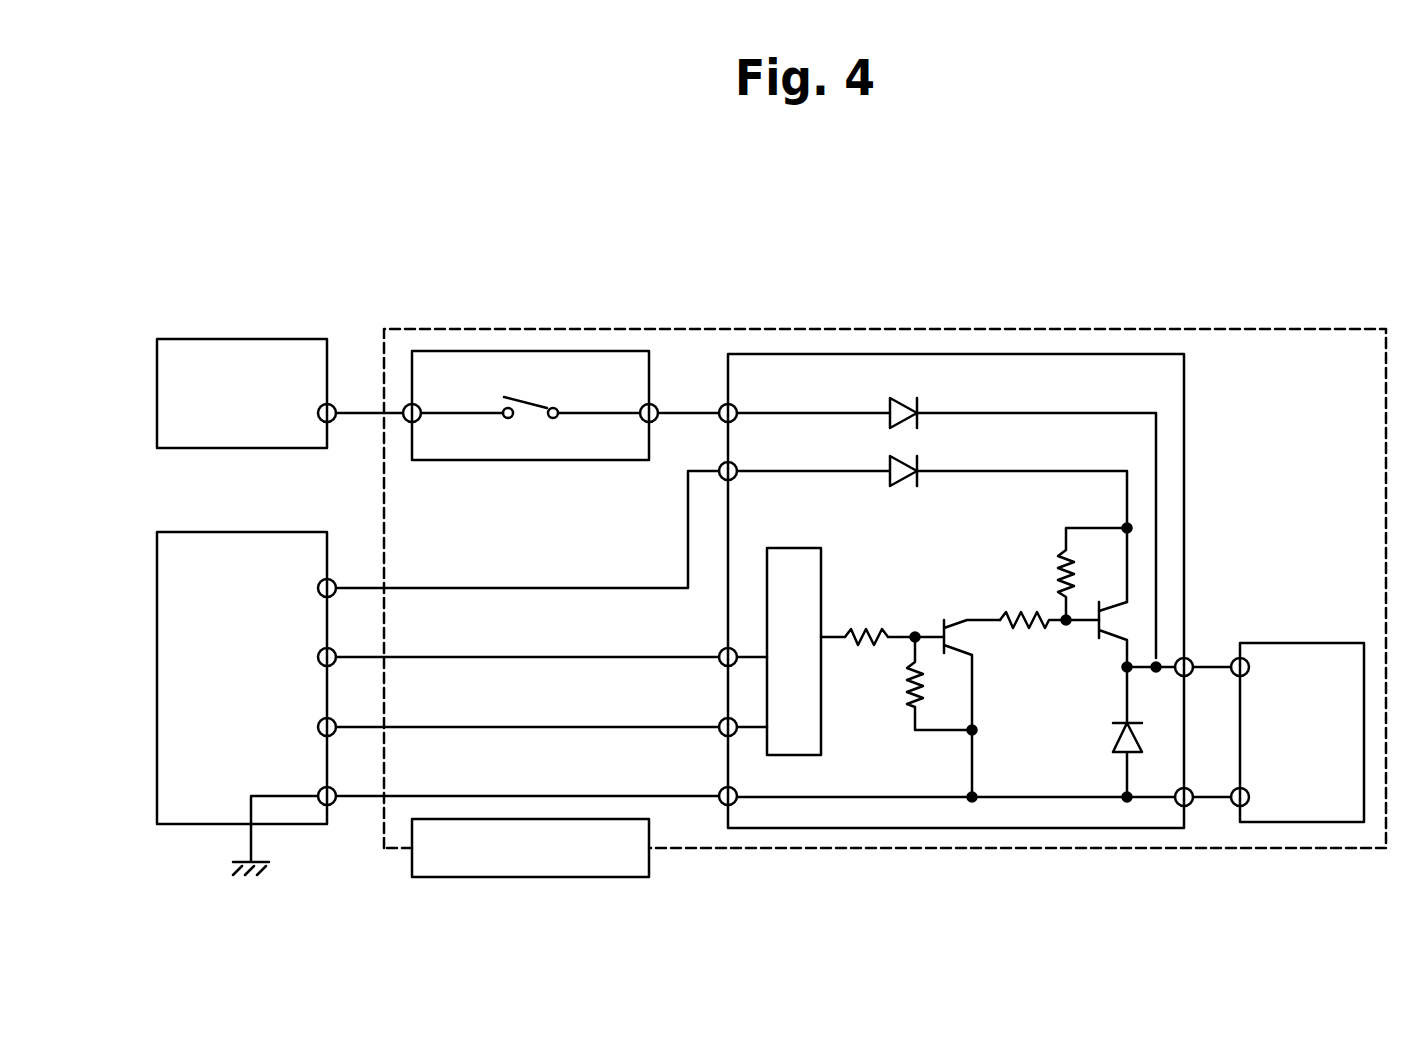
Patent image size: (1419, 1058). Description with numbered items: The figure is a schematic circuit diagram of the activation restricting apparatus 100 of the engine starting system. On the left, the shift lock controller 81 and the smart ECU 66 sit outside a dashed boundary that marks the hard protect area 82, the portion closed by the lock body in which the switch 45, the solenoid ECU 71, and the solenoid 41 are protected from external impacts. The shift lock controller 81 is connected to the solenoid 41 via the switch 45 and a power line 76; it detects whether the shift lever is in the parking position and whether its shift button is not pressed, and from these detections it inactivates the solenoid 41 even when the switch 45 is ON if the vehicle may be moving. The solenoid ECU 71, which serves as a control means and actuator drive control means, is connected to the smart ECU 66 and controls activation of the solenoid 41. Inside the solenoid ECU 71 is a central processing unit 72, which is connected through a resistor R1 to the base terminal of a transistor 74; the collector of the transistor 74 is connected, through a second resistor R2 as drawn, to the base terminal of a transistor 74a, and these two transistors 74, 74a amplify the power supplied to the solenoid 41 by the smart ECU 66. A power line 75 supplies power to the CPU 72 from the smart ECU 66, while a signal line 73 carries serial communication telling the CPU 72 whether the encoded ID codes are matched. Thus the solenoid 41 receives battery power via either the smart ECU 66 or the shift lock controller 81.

The activation restricting apparatus 100 is at (1256, 318).
The shift lock controller 81 is at (288, 339).
The power line 76 is at (340, 418).
The switch 45 is at (538, 460).
The smart ECU 66 is at (246, 532).
The power line 75 is at (459, 657).
The signal line 73 is at (460, 727).
The solenoid ECU 71 is at (1184, 385).
The central processing unit (CPU) 72 is at (821, 554).
The transistor 74 is at (960, 612).
The transistor 74a is at (1105, 655).
The resistor R1 is at (868, 628).
The resistor R2 is at (1022, 628).
The solenoid 41 is at (1322, 643).
The hard protect area 82 is at (578, 877).